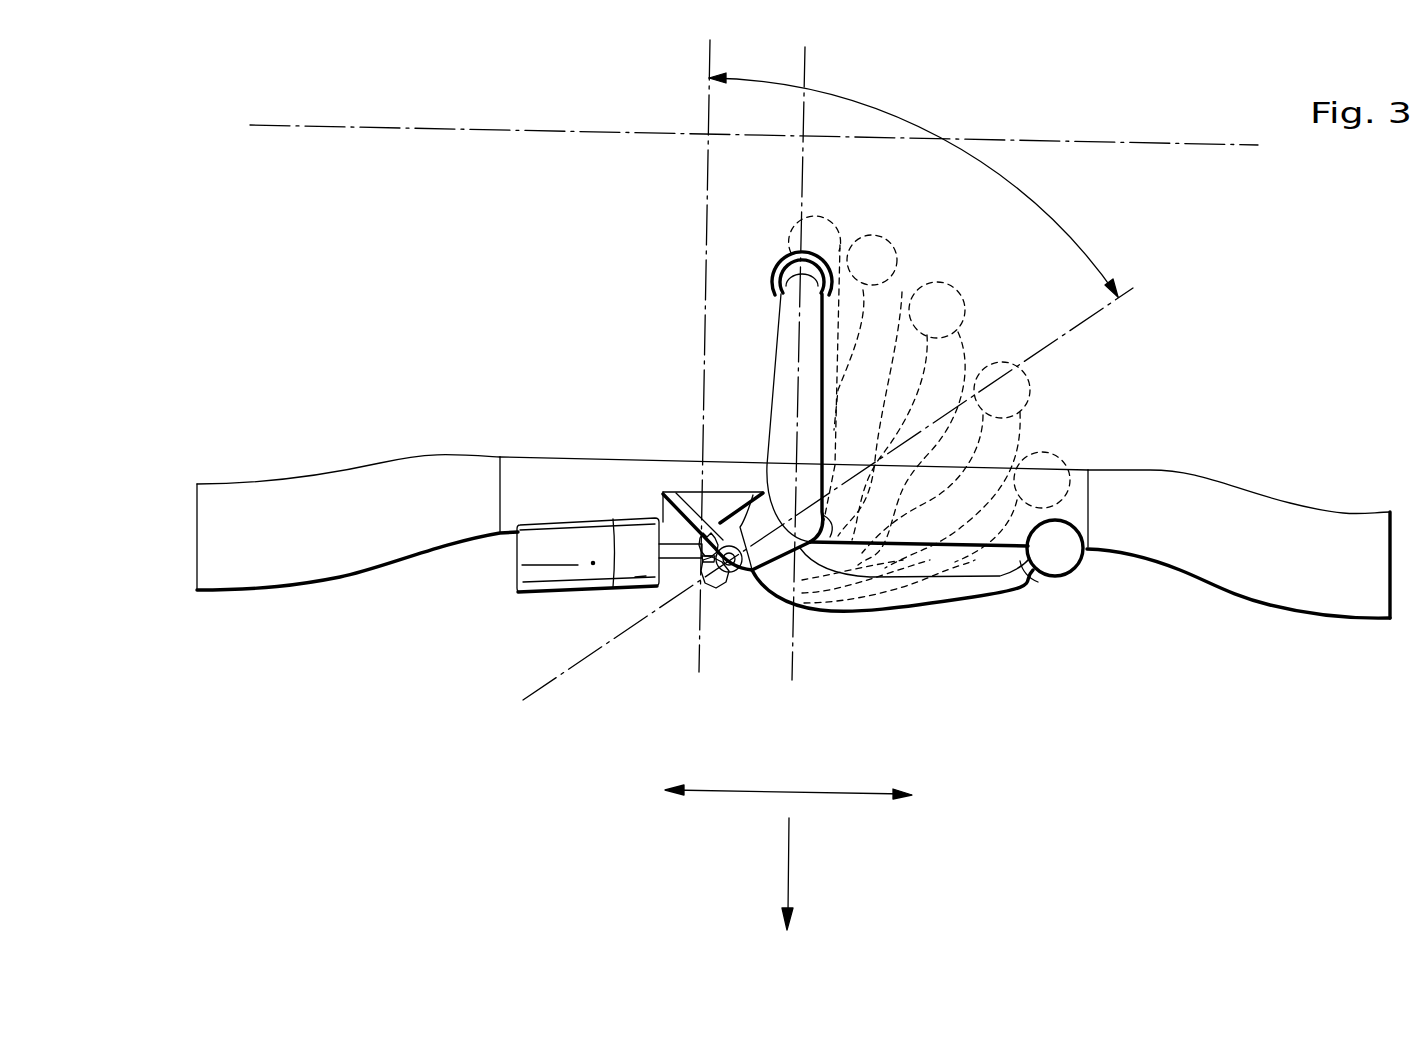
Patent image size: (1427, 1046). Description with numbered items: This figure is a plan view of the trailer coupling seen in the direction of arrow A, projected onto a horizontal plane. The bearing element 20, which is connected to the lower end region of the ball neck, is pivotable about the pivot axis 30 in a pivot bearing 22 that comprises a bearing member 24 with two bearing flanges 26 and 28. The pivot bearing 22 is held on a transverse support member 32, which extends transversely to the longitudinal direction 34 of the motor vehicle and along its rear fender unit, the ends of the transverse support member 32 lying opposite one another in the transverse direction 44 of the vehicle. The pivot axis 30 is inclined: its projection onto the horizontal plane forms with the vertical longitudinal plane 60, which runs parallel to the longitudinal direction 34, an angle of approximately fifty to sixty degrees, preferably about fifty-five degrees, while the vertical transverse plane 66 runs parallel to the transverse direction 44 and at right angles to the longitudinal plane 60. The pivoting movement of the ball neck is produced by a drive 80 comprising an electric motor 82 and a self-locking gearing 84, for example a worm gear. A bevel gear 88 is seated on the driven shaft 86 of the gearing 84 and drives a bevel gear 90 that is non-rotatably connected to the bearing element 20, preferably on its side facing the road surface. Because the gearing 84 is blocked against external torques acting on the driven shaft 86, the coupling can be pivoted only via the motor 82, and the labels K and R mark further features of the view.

The bearing element 20 is at (773, 560).
The pivot bearing 22 is at (722, 492).
The bearing member 24 is at (745, 490).
The bearing flange 26 is at (755, 574).
The bearing flange 28 is at (873, 560).
The pivot axis 30 is at (1102, 312).
The transverse support member 32 is at (535, 462).
The longitudinal direction 34 is at (790, 848).
The transverse direction 44 is at (840, 792).
The vertical longitudinal plane 60 is at (706, 180).
The vertical transverse plane 66 is at (390, 128).
The drive 80 is at (562, 584).
The electric motor 82 is at (520, 550).
The self-locking gearing 84 is at (633, 584).
The driven shaft 86 is at (666, 520).
The bevel gear 88 is at (680, 478).
The bevel gear 90 is at (717, 582).
The arrow A is at (778, 248).
The lever axis K is at (812, 68).
The ball R is at (1088, 566).